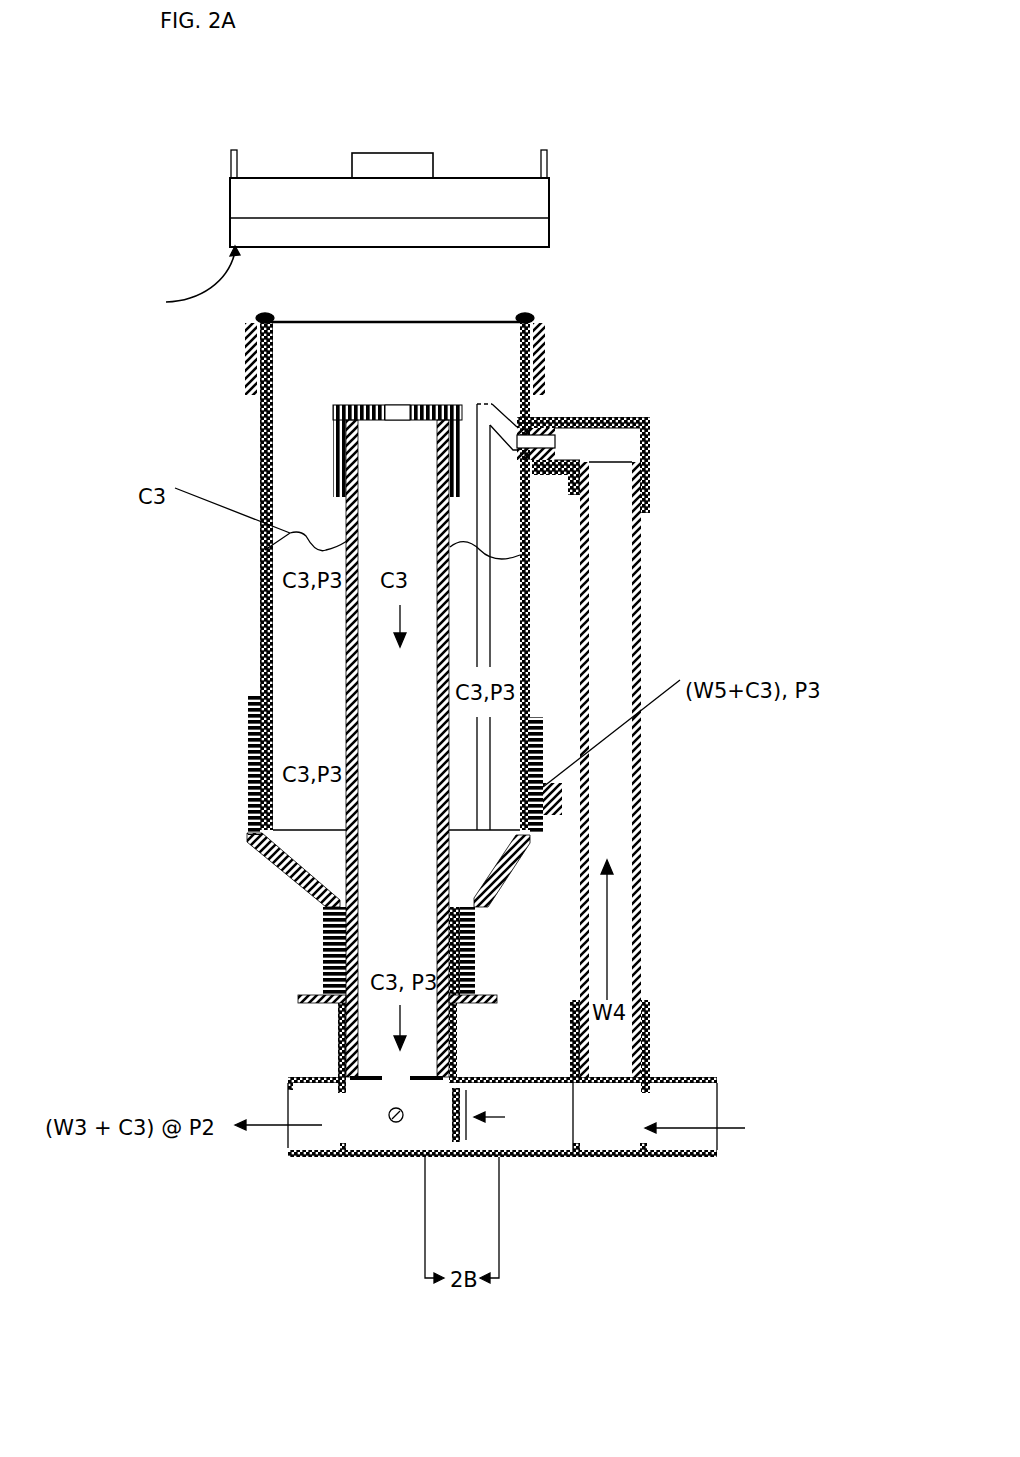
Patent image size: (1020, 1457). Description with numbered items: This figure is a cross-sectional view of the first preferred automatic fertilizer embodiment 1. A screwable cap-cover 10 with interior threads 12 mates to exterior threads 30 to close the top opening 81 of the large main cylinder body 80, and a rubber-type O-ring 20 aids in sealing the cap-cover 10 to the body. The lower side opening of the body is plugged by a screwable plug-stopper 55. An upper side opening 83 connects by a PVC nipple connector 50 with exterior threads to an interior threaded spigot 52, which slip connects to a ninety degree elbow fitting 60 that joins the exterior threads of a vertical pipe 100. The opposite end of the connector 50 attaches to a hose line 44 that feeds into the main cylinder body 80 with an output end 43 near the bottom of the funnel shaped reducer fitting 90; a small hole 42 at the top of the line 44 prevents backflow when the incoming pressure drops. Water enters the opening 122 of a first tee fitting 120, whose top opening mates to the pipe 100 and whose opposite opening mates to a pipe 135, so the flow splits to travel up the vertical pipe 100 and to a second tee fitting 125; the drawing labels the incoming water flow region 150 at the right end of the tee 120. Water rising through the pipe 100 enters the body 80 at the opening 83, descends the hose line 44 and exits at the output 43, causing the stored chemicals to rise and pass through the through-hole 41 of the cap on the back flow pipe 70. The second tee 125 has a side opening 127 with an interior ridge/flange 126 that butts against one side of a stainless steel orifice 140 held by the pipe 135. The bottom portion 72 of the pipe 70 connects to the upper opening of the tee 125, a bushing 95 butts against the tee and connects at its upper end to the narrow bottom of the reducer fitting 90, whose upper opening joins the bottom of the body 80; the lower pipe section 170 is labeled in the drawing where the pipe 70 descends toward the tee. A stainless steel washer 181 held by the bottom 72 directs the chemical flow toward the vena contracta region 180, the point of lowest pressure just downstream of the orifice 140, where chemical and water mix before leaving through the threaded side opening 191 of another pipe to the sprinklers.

The embodiment 1 is at (105, 83).
The screwable cap-cover 10 is at (550, 200).
The interior threads 12 is at (185, 284).
The O-ring 20 is at (528, 312).
The exterior threads 30 is at (550, 352).
The through-hole 41 is at (397, 404).
The small hole 42 is at (485, 400).
The output end 43 is at (470, 833).
The hose line 44 is at (490, 598).
The nipple connector 50 is at (618, 413).
The interior threaded spigot 52 is at (560, 468).
The screwable plug-stopper 55 is at (560, 797).
The ninety degree elbow fitting 60 is at (650, 462).
The pipe 70 is at (448, 577).
The main cylinder body 80 is at (530, 617).
The top opening 81 is at (462, 316).
The upper side opening 83 is at (547, 413).
The funnel shaped reducer fitting 90 is at (650, 887).
The bushing 95 is at (452, 997).
The vertical pipe 100 is at (650, 950).
The first tee fitting 120 is at (593, 1157).
The opening 122 is at (718, 1078).
The second tee fitting 125 is at (343, 1152).
The interior ridge/flange 126 is at (452, 1093).
The side opening 127 is at (495, 1120).
The pipe 135 is at (518, 1157).
The orifice 140 is at (451, 1135).
The inlet 150 is at (762, 1130).
The downcomer tube 170 is at (372, 1030).
The bottom portion 72 is at (440, 1072).
The vena contracta region 180 is at (394, 1123).
The stainless steel washer 181 is at (372, 1082).
The threaded side opening 191 is at (305, 1136).